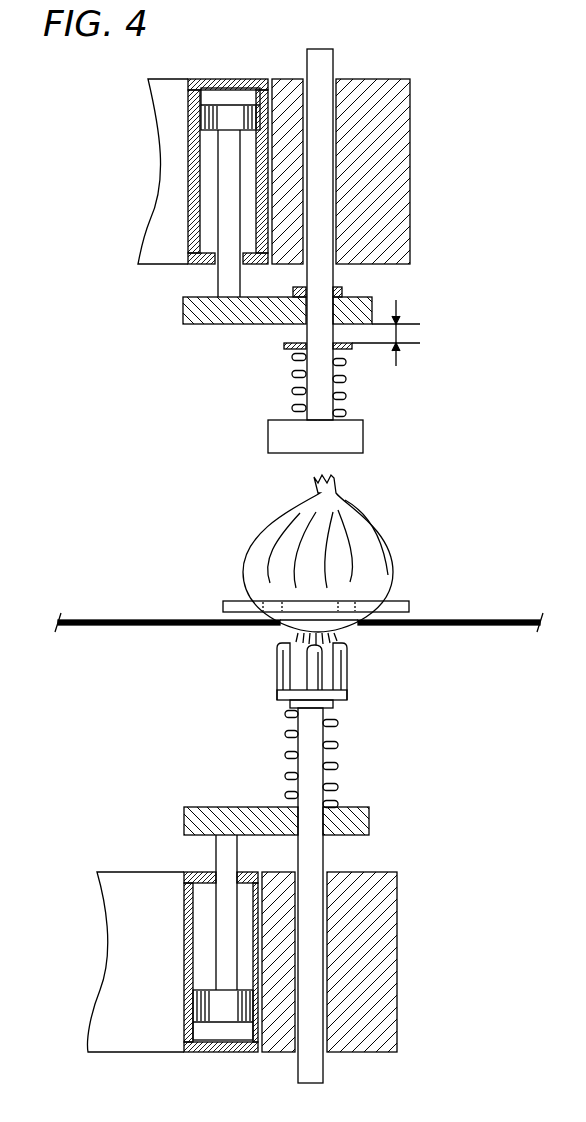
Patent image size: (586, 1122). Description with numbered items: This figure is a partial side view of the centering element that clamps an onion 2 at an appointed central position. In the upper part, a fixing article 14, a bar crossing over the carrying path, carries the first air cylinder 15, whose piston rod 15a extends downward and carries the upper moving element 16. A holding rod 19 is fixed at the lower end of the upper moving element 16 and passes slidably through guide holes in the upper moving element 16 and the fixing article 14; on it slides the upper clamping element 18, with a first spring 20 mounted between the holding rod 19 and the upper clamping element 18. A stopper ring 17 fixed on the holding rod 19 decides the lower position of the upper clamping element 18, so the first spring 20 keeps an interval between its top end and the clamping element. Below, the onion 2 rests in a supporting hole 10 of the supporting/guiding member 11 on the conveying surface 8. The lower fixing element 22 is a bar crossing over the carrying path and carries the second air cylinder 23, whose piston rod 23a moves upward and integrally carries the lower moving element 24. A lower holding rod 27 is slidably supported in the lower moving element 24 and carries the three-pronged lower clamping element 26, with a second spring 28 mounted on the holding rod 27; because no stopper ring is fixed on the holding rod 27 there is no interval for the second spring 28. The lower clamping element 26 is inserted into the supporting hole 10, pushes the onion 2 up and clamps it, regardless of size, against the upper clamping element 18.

The onion 2 is at (340, 522).
The conveyor belt 8 is at (78, 628).
The supporting hole 10 is at (372, 606).
The supporting/guiding member 11 is at (409, 607).
The fixing article 14 is at (405, 203).
The first air cylinder 15 is at (186, 185).
The piston rod 15a is at (222, 283).
The upper moving element 16 is at (190, 318).
The stopper ring 17 is at (342, 288).
The upper clamping element 18 is at (275, 440).
The holding rod 19 is at (333, 59).
The first spring 20 is at (346, 378).
The fixing element 22 is at (395, 948).
The second air cylinder 23 is at (186, 980).
The piston rod 23a is at (216, 850).
The lower moving element 24 is at (186, 812).
The lower clamping element 26 is at (348, 690).
The holding rod 27 is at (318, 1078).
The second spring 28 is at (340, 765).